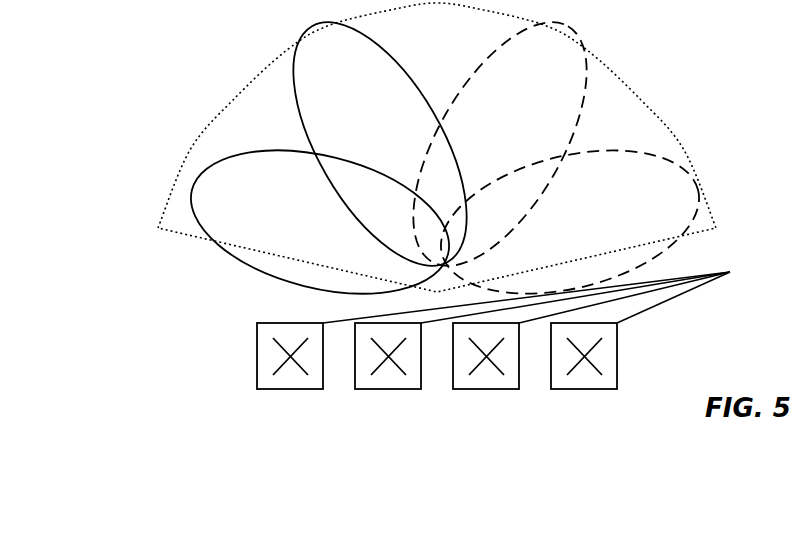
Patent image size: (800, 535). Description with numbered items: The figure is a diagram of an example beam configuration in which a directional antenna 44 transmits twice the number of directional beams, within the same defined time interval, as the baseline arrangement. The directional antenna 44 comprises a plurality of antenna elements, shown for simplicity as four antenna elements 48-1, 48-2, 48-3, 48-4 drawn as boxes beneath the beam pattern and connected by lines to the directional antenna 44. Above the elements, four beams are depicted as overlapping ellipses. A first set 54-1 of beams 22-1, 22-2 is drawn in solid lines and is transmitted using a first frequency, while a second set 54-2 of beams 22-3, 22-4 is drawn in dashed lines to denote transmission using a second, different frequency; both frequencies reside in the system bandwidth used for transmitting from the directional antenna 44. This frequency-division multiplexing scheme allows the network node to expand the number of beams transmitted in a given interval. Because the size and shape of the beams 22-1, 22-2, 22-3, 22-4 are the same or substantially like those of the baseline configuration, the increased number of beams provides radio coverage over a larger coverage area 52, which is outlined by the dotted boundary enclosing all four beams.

The directional beam 22-1 is at (268, 224).
The directional beam 22-2 is at (403, 132).
The directional beam 22-3 is at (538, 132).
The directional beam 22-4 is at (568, 226).
The directional antenna 44 is at (540, 292).
The antenna element 48-1 is at (290, 389).
The antenna element 48-2 is at (388, 389).
The antenna element 48-3 is at (486, 389).
The antenna element 48-4 is at (584, 389).
The coverage area 52 is at (172, 232).
The first set of beams 54-1 is at (222, 158).
The second set of beams 54-2 is at (593, 84).